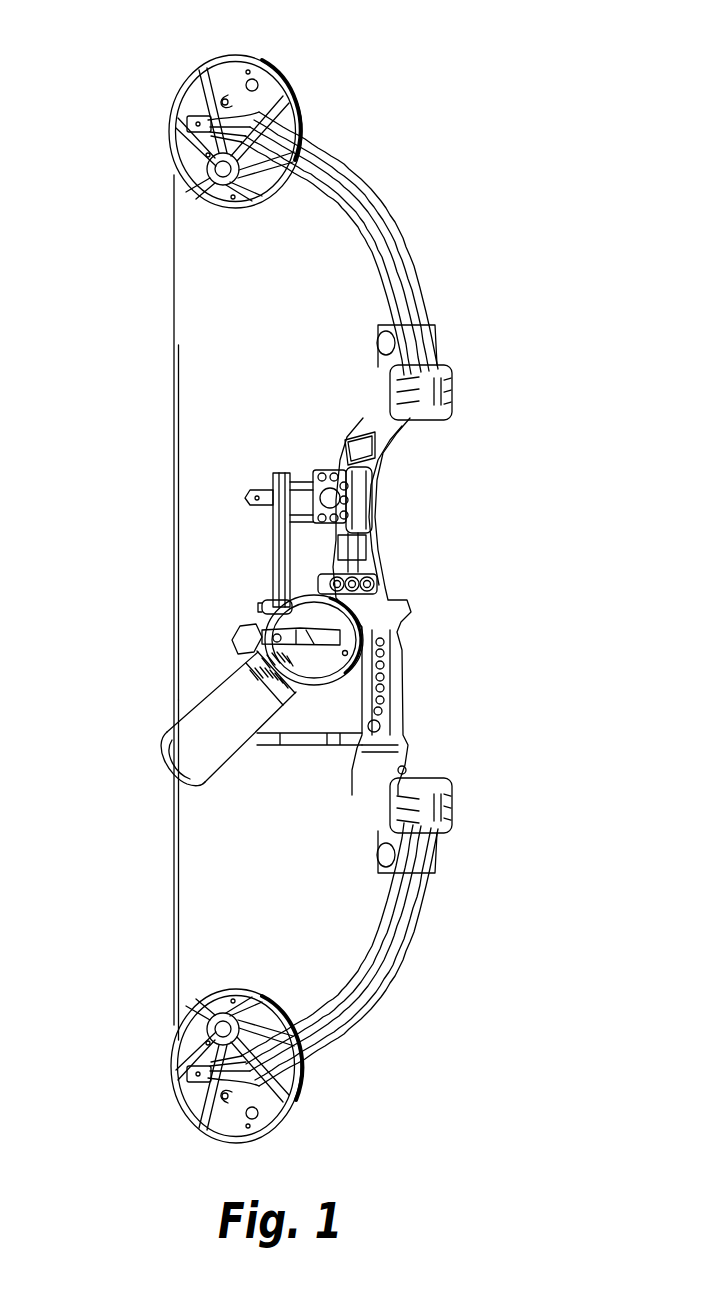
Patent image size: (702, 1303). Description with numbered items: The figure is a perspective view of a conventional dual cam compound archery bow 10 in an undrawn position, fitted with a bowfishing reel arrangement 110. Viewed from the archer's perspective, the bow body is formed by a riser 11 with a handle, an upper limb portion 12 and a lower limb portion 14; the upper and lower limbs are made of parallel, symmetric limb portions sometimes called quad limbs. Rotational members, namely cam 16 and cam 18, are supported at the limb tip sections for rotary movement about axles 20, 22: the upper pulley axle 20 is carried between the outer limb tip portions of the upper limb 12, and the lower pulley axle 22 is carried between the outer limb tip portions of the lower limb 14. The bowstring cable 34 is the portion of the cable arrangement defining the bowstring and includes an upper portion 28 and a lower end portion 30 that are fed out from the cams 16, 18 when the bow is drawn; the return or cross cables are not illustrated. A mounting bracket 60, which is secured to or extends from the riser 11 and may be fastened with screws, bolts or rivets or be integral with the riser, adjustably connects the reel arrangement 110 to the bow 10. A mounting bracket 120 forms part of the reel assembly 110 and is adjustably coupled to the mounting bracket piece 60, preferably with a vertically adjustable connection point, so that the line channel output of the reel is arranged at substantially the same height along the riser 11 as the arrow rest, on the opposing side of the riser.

The archery bow 10 is at (475, 198).
The riser 11 is at (391, 710).
The upper limb portion 12 is at (412, 256).
The lower limb portion 14 is at (406, 966).
The cam 16 is at (287, 86).
The cam 18 is at (291, 1110).
The upper pulley axle 20 is at (203, 122).
The lower pulley axle 22 is at (225, 1068).
The upper portion 28 is at (172, 228).
The lower end portion 30 is at (172, 908).
The bowstring cable 34 is at (172, 378).
The mounting bracket 60 is at (369, 505).
The bowfishing reel arrangement 110 is at (206, 663).
The mounting bracket 120 is at (272, 543).